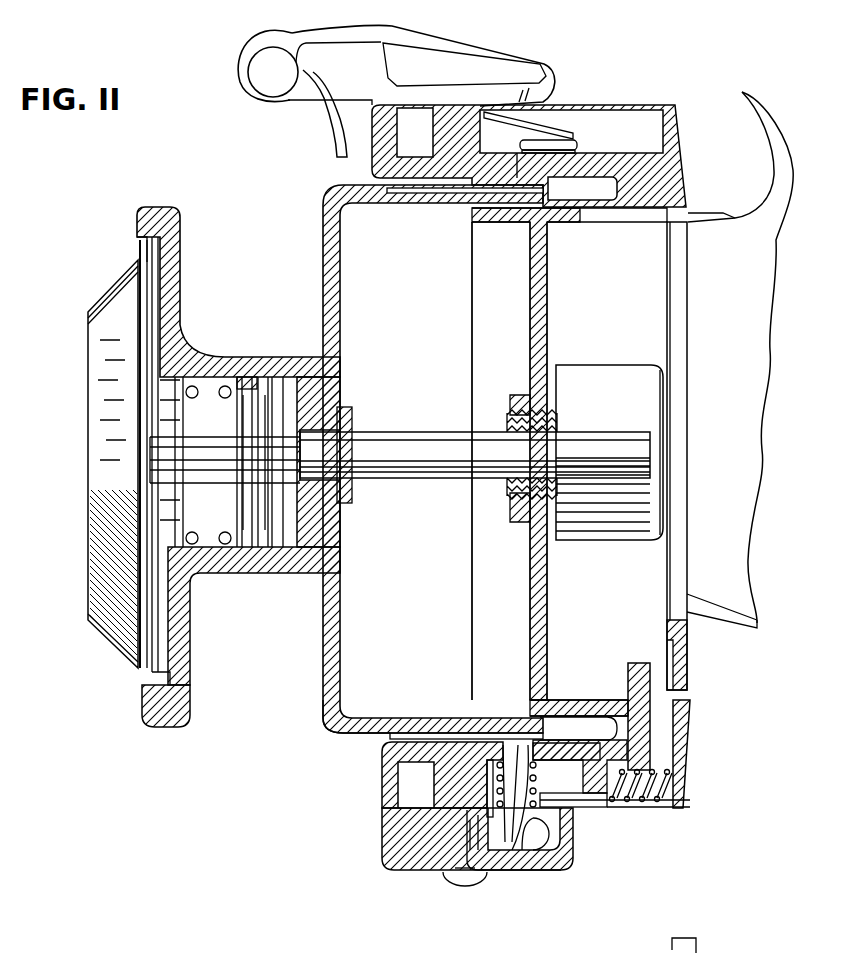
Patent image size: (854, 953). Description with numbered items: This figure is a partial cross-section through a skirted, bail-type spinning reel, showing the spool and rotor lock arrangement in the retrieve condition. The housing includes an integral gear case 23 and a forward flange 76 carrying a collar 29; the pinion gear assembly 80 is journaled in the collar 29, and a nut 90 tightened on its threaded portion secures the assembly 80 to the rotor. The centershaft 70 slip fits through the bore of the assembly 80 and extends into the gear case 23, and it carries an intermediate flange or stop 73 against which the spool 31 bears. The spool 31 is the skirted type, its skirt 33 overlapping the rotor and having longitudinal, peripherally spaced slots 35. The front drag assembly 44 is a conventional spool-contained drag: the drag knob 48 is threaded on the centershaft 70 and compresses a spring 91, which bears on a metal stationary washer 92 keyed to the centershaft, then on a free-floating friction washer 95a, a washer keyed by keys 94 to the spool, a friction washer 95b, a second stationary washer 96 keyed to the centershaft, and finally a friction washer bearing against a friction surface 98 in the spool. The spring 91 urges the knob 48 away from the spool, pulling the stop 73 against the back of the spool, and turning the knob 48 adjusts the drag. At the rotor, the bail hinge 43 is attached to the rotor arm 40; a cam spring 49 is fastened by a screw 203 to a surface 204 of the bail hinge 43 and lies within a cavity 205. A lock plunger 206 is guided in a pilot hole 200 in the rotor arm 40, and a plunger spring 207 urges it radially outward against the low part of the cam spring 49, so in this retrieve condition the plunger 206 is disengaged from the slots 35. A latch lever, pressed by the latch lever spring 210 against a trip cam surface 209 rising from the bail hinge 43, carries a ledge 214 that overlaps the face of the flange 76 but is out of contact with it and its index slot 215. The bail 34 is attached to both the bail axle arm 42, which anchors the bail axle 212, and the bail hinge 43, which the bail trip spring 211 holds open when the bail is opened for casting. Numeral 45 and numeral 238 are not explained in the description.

The gear case 23 is at (710, 238).
The collar 29 is at (602, 364).
The spool 31 is at (178, 262).
The skirt 33 is at (350, 738).
The bail 34 is at (318, 127).
The slots 35 is at (406, 728).
The rotor arm 40 is at (382, 775).
The bail axle arm 42 is at (487, 48).
The bail hinge 43 is at (382, 833).
The front drag assembly 44 is at (232, 492).
The lower leg 45 is at (176, 728).
The drag knob 48 is at (100, 470).
The cam spring 49 is at (570, 868).
The centershaft 70 is at (412, 472).
The intermediate flange or stop 73 is at (350, 413).
The flange 76 is at (671, 556).
The pinion gear assembly 80 is at (506, 486).
The nut 90 is at (516, 396).
The spring 91 is at (194, 386).
The metal stationary washer 92 is at (240, 395).
The keys 94 is at (262, 395).
The free-floating friction washer 95a is at (247, 532).
The friction washer 95b is at (268, 532).
The second stationary washer 96 is at (340, 357).
The friction surface 98 is at (300, 508).
The pilot hole 200 is at (518, 862).
The screw 203 is at (462, 850).
The surface 204 is at (487, 880).
The cavity 205 is at (485, 852).
The lock plunger 206 is at (545, 852).
The plunger spring 207 is at (585, 795).
The trip cam surface 209 is at (497, 774).
The latch lever spring 210 is at (665, 809).
The bail trip spring 211 is at (557, 130).
The bail axle 212 is at (258, 74).
The ledge 214 is at (645, 718).
The index slot 215 is at (668, 655).
The port 238 is at (455, 877).